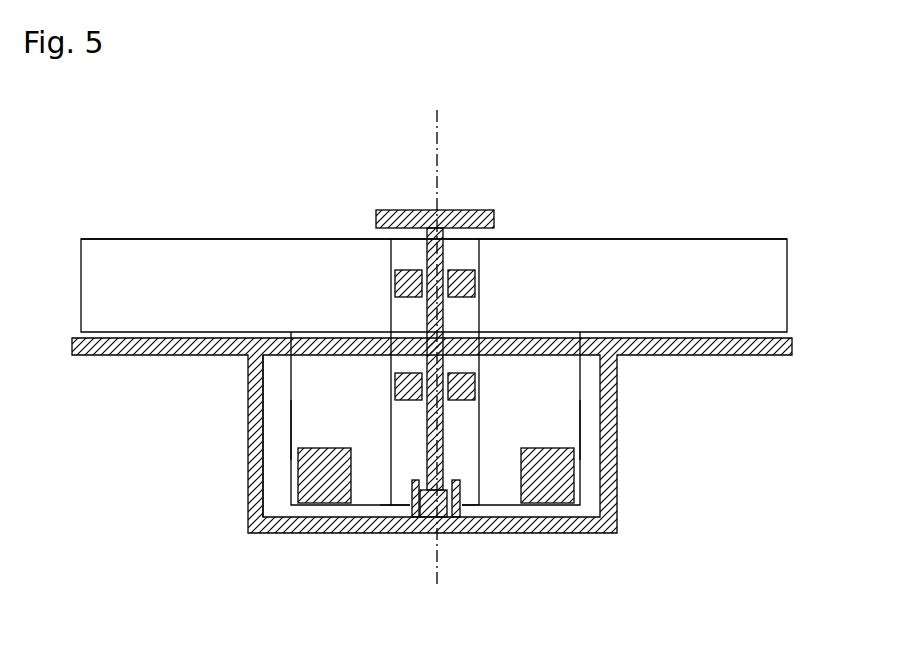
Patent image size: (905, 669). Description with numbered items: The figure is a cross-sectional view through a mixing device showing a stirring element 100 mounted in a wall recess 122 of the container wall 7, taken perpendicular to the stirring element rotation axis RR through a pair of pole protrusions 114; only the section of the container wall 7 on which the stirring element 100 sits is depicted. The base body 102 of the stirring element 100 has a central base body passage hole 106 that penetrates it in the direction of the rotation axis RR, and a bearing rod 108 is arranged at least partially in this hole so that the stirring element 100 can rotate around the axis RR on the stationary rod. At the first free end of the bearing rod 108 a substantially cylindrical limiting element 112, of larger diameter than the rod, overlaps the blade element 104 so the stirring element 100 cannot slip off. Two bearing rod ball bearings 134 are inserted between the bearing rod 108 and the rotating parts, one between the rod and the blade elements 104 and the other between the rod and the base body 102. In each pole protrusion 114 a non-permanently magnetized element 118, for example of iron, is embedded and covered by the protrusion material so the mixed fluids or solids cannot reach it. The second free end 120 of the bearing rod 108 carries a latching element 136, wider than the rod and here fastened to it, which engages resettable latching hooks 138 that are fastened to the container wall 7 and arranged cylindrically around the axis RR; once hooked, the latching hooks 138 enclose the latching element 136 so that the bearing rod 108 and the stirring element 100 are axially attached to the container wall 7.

The container wall 7 is at (747, 345).
The stirring element 100 is at (678, 270).
The base body 102 is at (310, 382).
The blade element 104 is at (110, 257).
The base body passage hole 106 is at (405, 480).
The bearing rod 108 is at (403, 250).
The limiting element 112 is at (480, 212).
The pole protrusion 114 is at (305, 428).
The non-permanently magnetized element 118 is at (310, 480).
The second free end 120 is at (474, 475).
The wall recess 122 is at (274, 507).
The bearing rod ball bearing 134 is at (403, 282).
The latching element 136 is at (447, 492).
The latching hook 138 is at (410, 483).
The stirring element rotation axis RR is at (438, 130).